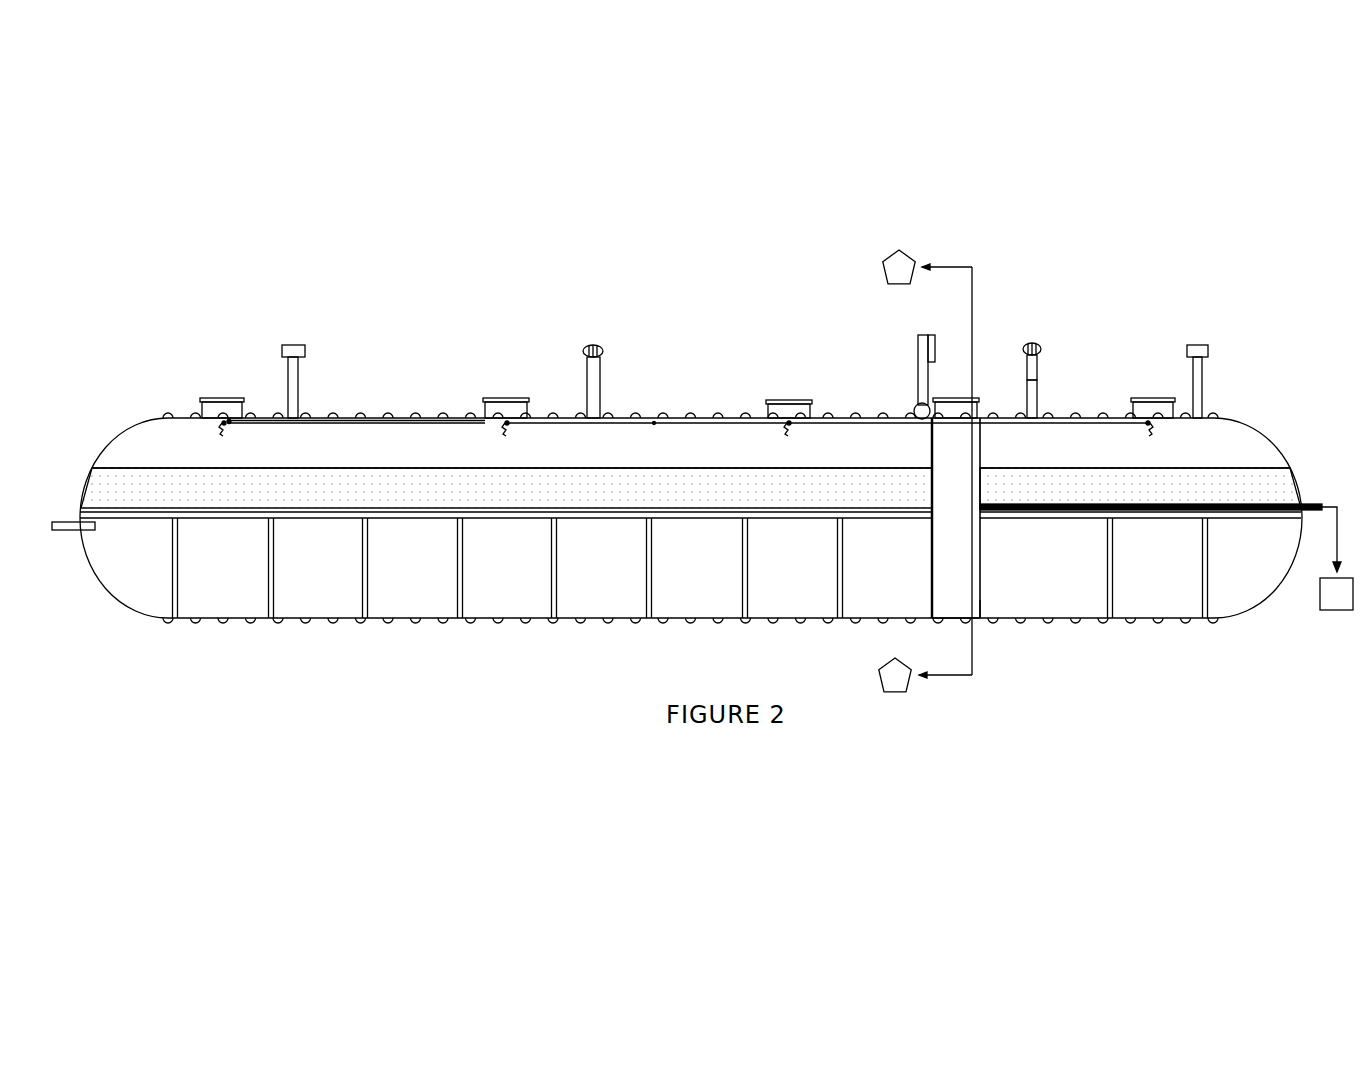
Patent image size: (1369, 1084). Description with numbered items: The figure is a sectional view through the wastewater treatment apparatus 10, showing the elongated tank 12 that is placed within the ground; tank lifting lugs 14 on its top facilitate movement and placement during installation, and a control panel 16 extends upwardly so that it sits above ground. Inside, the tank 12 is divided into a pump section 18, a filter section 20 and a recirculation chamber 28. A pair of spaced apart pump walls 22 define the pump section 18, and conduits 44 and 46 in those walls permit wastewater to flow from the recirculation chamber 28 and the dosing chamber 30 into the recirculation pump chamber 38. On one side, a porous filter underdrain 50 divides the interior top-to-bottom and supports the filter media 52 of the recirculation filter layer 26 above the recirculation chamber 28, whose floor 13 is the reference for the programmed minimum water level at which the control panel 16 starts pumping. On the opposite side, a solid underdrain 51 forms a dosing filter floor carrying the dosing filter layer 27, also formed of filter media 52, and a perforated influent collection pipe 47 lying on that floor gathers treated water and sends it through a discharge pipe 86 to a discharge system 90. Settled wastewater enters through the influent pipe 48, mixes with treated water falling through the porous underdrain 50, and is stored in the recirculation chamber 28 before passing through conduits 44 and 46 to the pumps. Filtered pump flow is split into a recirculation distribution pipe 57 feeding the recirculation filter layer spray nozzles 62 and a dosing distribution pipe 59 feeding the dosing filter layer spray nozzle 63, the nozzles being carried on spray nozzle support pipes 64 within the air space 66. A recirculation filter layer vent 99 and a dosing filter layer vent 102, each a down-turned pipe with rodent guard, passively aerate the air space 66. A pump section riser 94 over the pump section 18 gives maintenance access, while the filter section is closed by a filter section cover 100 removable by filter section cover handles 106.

The wastewater treatment apparatus 10 is at (1243, 408).
The tank 12 is at (1283, 455).
The floor of recirculation chamber 13 is at (680, 617).
The tank lifting lugs 14 is at (757, 416).
The control panel 16 is at (933, 333).
The pump section 18 is at (949, 541).
The filter section 20 is at (1033, 440).
The pump walls 22 is at (930, 557).
The recirculation filter layer 26 is at (500, 493).
The dosing filter layer 27 is at (1137, 495).
The recirculation chamber 28 is at (607, 565).
The dosing chamber 30 is at (1138, 585).
The recirculation pump chamber 38 is at (957, 580).
The recirculation conduit 44 is at (930, 605).
The recirculation conduit 46 is at (983, 605).
The influent collection pipe 47 is at (1283, 503).
The influent pipe 48 is at (62, 520).
The porous filter underdrain 50 is at (198, 520).
The solid underdrain 51 is at (1150, 518).
The filter media 52 is at (691, 466).
The recirculation distribution pipe 57 is at (600, 424).
The dosing distribution pipe 59 is at (1067, 423).
The recirculation filter layer spray nozzles 62 is at (220, 428).
The dosing filter layer spray nozzle 63 is at (1155, 427).
The spray nozzle support pipes 64 is at (250, 421).
The air space 66 is at (350, 443).
The discharge pipe 86 is at (1322, 503).
The discharge system 90 is at (1320, 592).
The pump section riser 94 is at (977, 405).
The recirculation filter layer vent 99 is at (304, 350).
The filter section cover 100 is at (800, 400).
The dosing filter layer vent 102 is at (1128, 361).
The filter section cover handles 106 is at (233, 398).